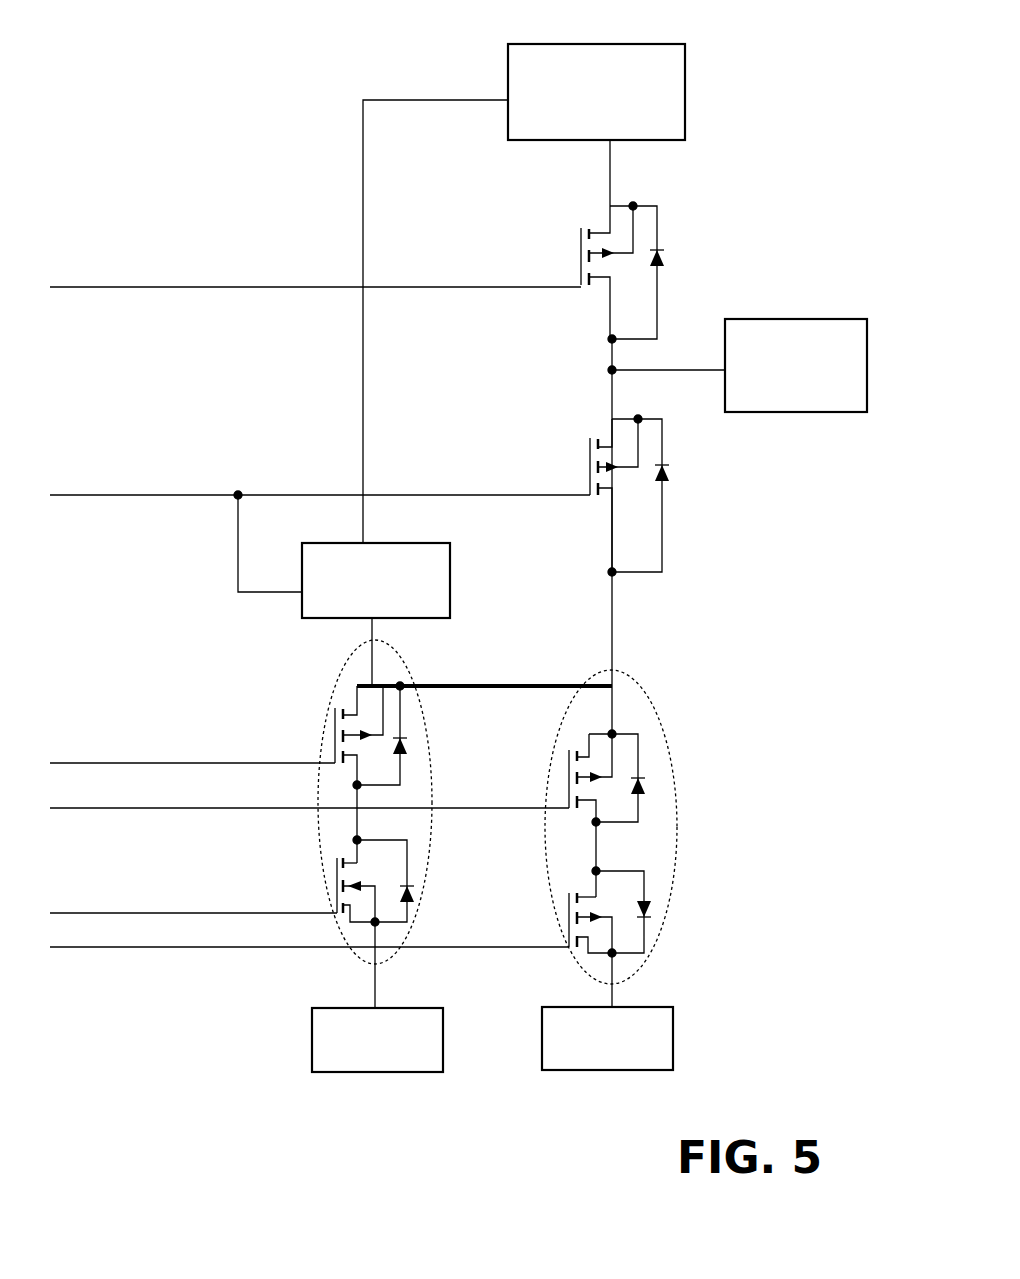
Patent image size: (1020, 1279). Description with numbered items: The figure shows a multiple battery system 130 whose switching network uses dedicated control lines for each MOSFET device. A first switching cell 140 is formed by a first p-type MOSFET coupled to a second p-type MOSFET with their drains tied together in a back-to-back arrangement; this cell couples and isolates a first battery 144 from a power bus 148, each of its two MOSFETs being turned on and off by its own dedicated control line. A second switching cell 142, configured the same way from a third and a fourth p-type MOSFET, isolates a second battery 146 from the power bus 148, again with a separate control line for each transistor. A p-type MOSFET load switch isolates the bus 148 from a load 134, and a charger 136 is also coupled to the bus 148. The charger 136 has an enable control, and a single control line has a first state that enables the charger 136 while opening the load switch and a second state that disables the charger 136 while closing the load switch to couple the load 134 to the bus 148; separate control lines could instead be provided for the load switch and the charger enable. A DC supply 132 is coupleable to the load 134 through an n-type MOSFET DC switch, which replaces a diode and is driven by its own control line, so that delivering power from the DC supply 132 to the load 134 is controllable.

The multiple battery system 130 is at (176, 122).
The DC supply 132 is at (612, 44).
The load 134 is at (797, 319).
The charger 136 is at (407, 543).
The first switching cell 140 is at (290, 841).
The second switching cell 142 is at (559, 723).
The first battery 144 is at (408, 1008).
The second battery 146 is at (648, 1007).
The power bus 148 is at (503, 655).